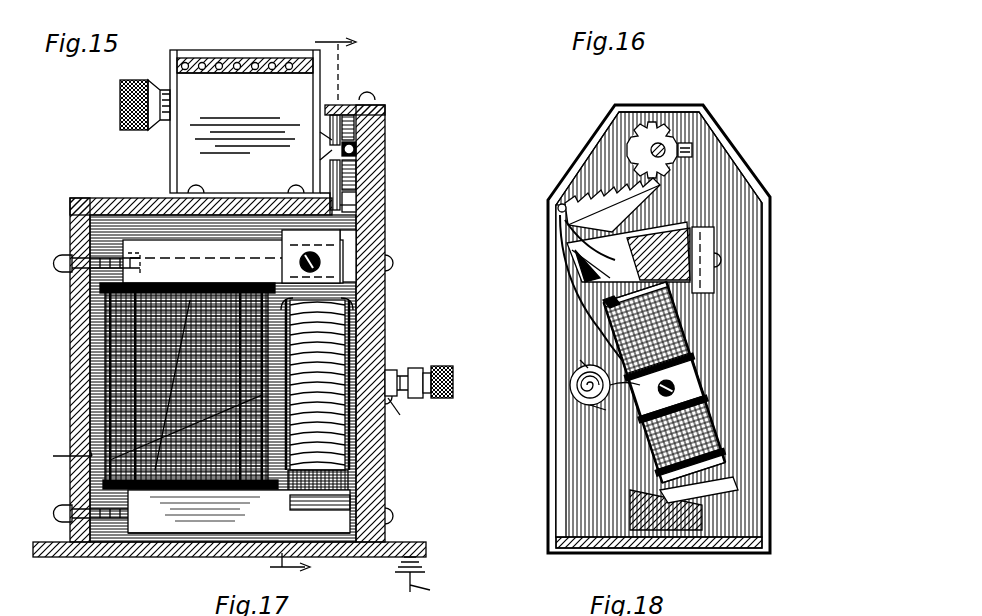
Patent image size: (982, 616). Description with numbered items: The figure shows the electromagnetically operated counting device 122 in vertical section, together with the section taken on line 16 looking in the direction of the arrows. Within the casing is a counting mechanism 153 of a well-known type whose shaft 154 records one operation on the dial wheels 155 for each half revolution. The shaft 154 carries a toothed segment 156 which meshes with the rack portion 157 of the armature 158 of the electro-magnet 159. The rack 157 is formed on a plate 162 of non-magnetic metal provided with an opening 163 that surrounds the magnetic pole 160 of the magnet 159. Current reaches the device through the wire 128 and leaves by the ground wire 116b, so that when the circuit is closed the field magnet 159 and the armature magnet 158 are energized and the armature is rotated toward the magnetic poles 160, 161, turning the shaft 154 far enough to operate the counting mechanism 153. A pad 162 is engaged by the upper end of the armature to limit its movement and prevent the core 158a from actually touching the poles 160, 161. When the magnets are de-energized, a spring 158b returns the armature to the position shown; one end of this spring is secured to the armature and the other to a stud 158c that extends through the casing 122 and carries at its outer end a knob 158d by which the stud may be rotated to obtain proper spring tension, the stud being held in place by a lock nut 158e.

In FIG. 15, the counting mechanism 153 is at (237, 95).
In FIG. 15, the dial wheels 155 is at (278, 58).
In FIG. 15, the section line 16 is at (313, 303).
In FIG. 15, the shaft 154 is at (358, 150).
In FIG. 16, the shaft 154 is at (662, 146).
In FIG. 15, the toothed segment 156 is at (356, 170).
In FIG. 16, the toothed segment 156 is at (680, 166).
In FIG. 15, the rack portion 157 is at (356, 192).
In FIG. 16, the rack portion 157 is at (592, 183).
In FIG. 15, the counting device 122 is at (383, 228).
In FIG. 15, the magnetic pole 160 is at (348, 258).
In FIG. 16, the magnetic pole 160 is at (659, 329).
In FIG. 15, the pad 162 is at (255, 274).
In FIG. 16, the pad 162 is at (560, 245).
In FIG. 16, the opening 163 is at (597, 277).
In FIG. 15, the electro-magnet 159 is at (72, 382).
In FIG. 15, the wire 128 is at (64, 456).
In FIG. 15, the armature 158 is at (357, 343).
In FIG. 16, the armature 158 is at (680, 340).
In FIG. 16, the core 158a is at (603, 300).
In FIG. 16, the spring 158b is at (590, 405).
In FIG. 16, the stud 158c is at (576, 398).
In FIG. 15, the knob 158d is at (453, 383).
In FIG. 16, the knob 158d is at (582, 360).
In FIG. 15, the lock nut 158e is at (400, 415).
In FIG. 15, the magnetic pole 161 is at (345, 522).
In FIG. 16, the magnetic pole 161 is at (632, 512).
In FIG. 15, the ground wire 116b is at (434, 580).